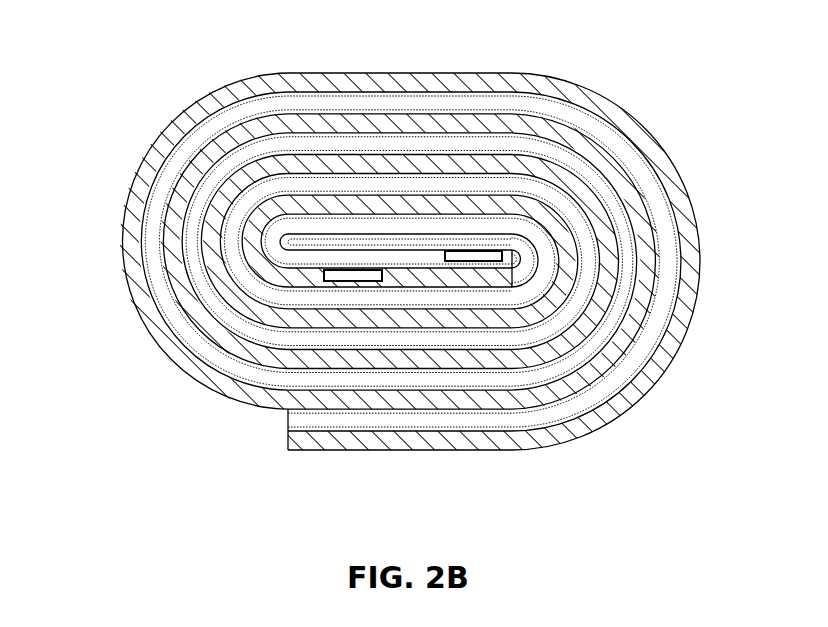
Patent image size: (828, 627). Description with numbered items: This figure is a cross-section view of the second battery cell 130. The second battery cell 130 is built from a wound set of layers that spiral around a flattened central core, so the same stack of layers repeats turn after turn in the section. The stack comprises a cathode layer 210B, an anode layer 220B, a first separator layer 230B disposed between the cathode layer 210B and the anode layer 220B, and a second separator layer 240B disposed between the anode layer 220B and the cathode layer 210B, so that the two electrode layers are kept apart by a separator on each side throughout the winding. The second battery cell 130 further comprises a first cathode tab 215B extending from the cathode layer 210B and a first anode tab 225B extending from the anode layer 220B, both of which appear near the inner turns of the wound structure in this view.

The second battery cell 130 is at (93, 46).
The cathode layer 210B is at (288, 420).
The first cathode tab 215B is at (502, 256).
The anode layer 220B is at (520, 448).
The first anode tab 225B is at (324, 276).
The first separator layer 230B is at (288, 428).
The second separator layer 240B is at (287, 409).